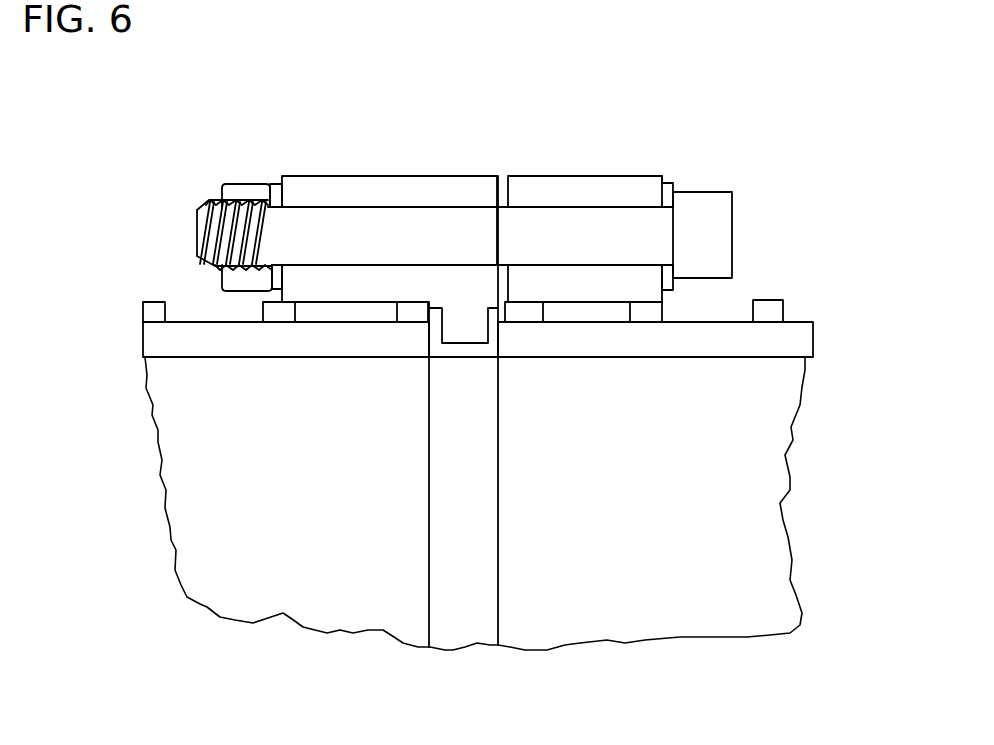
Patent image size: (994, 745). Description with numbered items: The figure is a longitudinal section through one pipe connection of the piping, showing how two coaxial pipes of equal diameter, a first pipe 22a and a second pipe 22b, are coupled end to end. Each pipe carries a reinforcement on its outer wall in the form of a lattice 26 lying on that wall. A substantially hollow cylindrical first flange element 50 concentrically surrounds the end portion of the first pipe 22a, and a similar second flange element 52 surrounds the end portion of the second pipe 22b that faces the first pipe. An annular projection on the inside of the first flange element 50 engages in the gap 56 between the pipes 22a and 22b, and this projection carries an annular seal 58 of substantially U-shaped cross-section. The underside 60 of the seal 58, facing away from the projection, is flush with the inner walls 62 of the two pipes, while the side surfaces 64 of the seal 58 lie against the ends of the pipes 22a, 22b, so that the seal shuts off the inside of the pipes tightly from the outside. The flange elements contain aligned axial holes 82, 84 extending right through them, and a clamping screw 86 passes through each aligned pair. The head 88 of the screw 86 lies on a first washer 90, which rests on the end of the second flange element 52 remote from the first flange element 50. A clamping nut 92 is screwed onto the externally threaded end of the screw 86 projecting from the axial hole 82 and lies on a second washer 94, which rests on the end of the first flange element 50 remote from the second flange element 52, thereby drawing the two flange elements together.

The first pipe 22a is at (158, 337).
The second pipe 22b is at (758, 343).
The lattice 26 is at (150, 310).
The first flange element 50 is at (427, 190).
The second flange element 52 is at (630, 185).
The gap 56 is at (452, 617).
The annular seal 58 is at (497, 313).
The underside 60 is at (472, 357).
The inner walls 62 is at (174, 357).
The side surfaces 64 is at (429, 337).
The axial hole 82 is at (352, 212).
The axial hole 84 is at (570, 215).
The clamping screw 86 is at (660, 233).
The head 88 is at (723, 243).
The first washer 90 is at (671, 187).
The clamping nut 92 is at (236, 189).
The second washer 94 is at (277, 186).